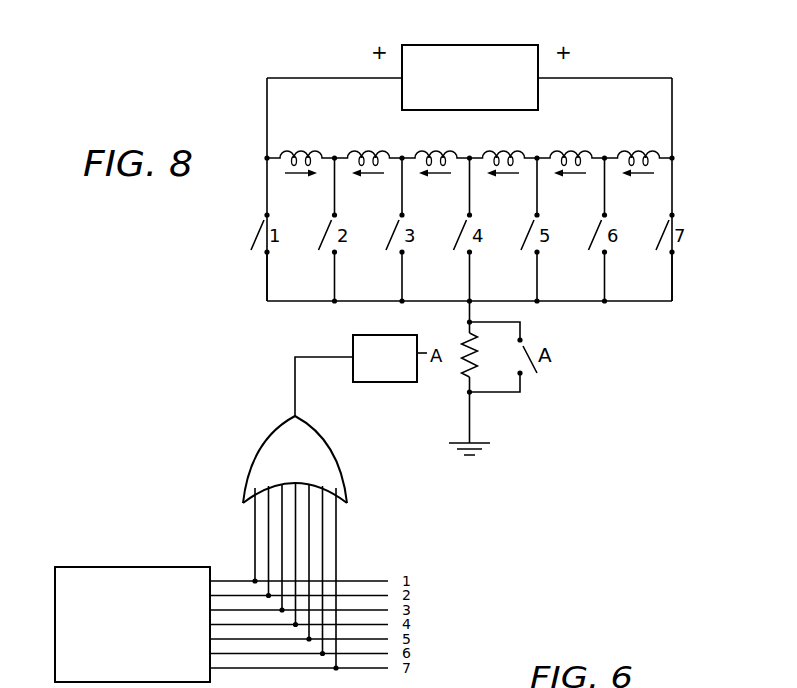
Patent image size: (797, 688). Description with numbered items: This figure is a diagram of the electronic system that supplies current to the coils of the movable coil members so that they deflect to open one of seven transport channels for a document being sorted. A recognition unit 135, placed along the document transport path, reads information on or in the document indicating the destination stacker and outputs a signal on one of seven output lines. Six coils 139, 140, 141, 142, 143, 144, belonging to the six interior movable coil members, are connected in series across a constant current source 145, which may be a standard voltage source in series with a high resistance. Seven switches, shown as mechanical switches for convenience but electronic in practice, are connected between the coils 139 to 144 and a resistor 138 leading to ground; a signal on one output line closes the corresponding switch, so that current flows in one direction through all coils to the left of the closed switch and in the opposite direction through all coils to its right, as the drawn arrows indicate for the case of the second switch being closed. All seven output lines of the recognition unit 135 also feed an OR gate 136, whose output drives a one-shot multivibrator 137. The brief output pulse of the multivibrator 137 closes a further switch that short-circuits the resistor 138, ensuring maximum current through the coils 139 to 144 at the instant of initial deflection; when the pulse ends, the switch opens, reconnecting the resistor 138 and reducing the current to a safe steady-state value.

The recognition unit 135 is at (99, 567).
The OR gate 136 is at (342, 478).
The one-shot multivibrator 137 is at (353, 346).
The resistor 138 is at (467, 372).
The coil 139 is at (293, 152).
The coil 140 is at (361, 152).
The coil 141 is at (428, 152).
The coil 142 is at (496, 152).
The coil 143 is at (563, 152).
The coil 144 is at (634, 150).
The constant current source 145 is at (478, 44).